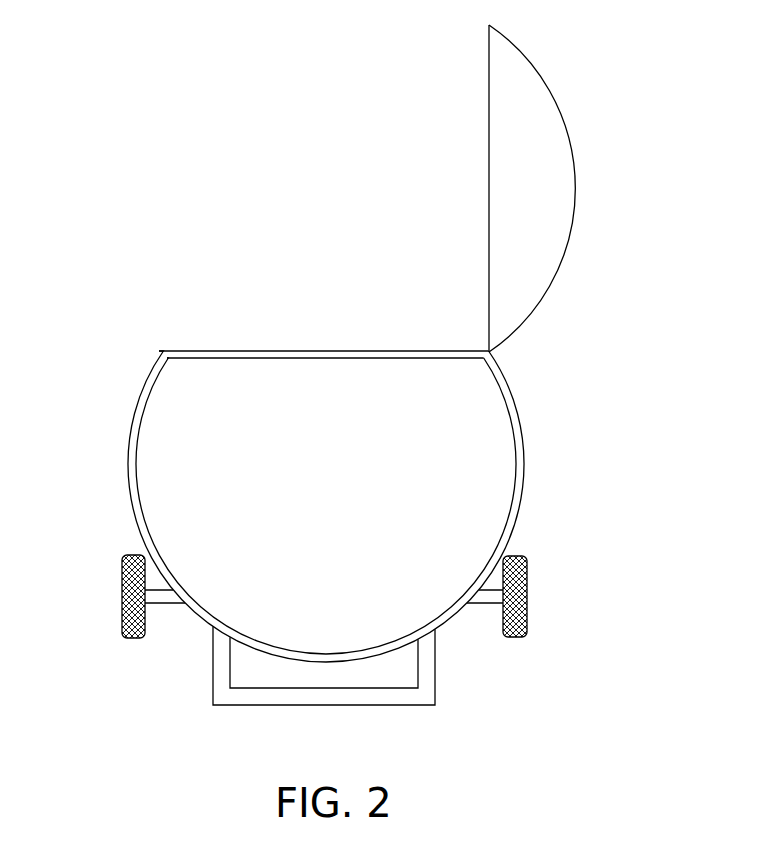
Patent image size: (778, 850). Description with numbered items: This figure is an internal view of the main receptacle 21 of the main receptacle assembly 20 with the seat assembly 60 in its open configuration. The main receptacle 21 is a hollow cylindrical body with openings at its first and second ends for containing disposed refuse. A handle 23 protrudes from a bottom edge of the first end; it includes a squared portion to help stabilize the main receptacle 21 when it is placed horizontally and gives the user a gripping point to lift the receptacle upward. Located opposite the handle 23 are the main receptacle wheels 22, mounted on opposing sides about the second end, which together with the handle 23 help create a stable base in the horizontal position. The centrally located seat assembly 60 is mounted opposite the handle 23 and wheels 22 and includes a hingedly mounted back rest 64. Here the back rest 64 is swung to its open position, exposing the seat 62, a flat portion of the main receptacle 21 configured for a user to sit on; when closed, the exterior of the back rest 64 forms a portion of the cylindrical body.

The main receptacle assembly 20 is at (314, 469).
The main receptacle 21 is at (524, 463).
The main receptacle wheels 22 is at (122, 610).
The handle 23 is at (212, 680).
The seat assembly 60 is at (565, 188).
The seat 62 is at (258, 351).
The back rest 64 is at (550, 195).